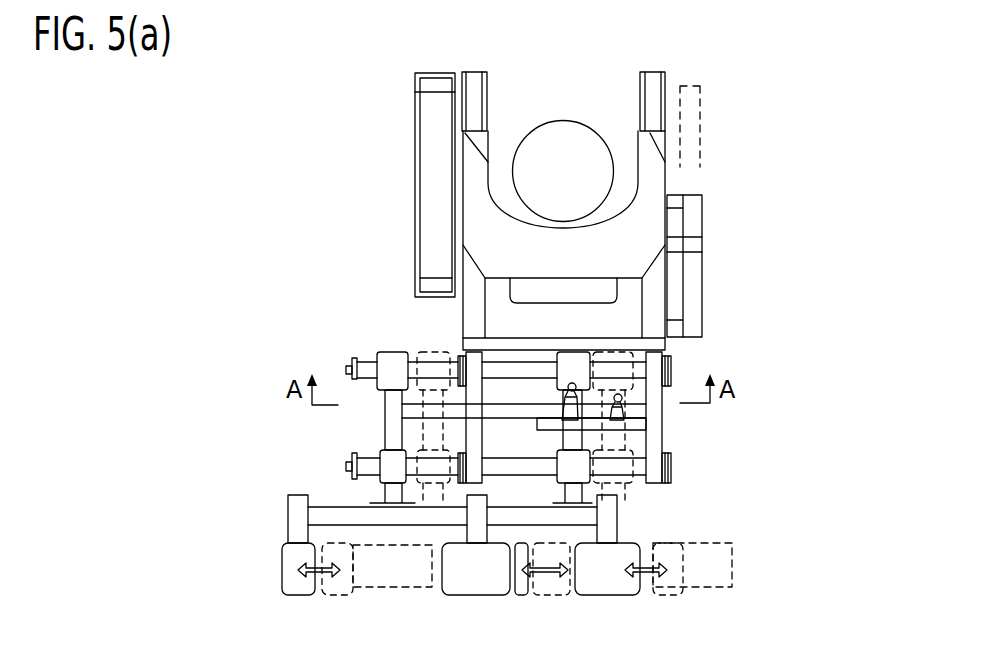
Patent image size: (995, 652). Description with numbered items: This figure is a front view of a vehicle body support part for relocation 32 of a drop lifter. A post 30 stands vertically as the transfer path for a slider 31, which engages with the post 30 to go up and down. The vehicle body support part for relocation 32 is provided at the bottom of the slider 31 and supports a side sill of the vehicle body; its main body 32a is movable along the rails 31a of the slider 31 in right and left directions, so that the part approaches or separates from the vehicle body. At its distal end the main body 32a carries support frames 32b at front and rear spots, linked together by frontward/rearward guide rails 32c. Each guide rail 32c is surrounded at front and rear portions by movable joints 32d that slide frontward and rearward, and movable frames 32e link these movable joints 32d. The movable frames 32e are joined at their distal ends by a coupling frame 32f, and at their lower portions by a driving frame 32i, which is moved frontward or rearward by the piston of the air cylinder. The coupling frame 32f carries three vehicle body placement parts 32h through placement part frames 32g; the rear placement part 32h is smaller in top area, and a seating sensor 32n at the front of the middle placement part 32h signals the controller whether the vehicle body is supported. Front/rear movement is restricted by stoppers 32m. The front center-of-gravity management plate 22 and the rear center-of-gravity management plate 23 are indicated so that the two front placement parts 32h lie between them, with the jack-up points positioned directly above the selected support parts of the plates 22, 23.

The front center-of-gravity management plate 22 is at (709, 594).
The rear center-of-gravity management plate 23 is at (386, 594).
The post 30 is at (562, 128).
The slider 31 is at (398, 193).
The rail 31a is at (478, 98).
The vehicle body support part for relocation 32 is at (258, 395).
The main body 32a is at (512, 320).
The support frame 32b is at (473, 393).
The frontward/rearward guide rail 32c is at (357, 366).
The movable joint 32d is at (392, 360).
The movable frame 32e is at (333, 520).
The coupling frame 32f is at (303, 561).
The placement part frame 32g is at (300, 530).
The vehicle body placement part 32h is at (297, 580).
The driving frame 32i is at (413, 410).
The stopper 32m is at (582, 396).
The seating sensor 32n is at (521, 588).